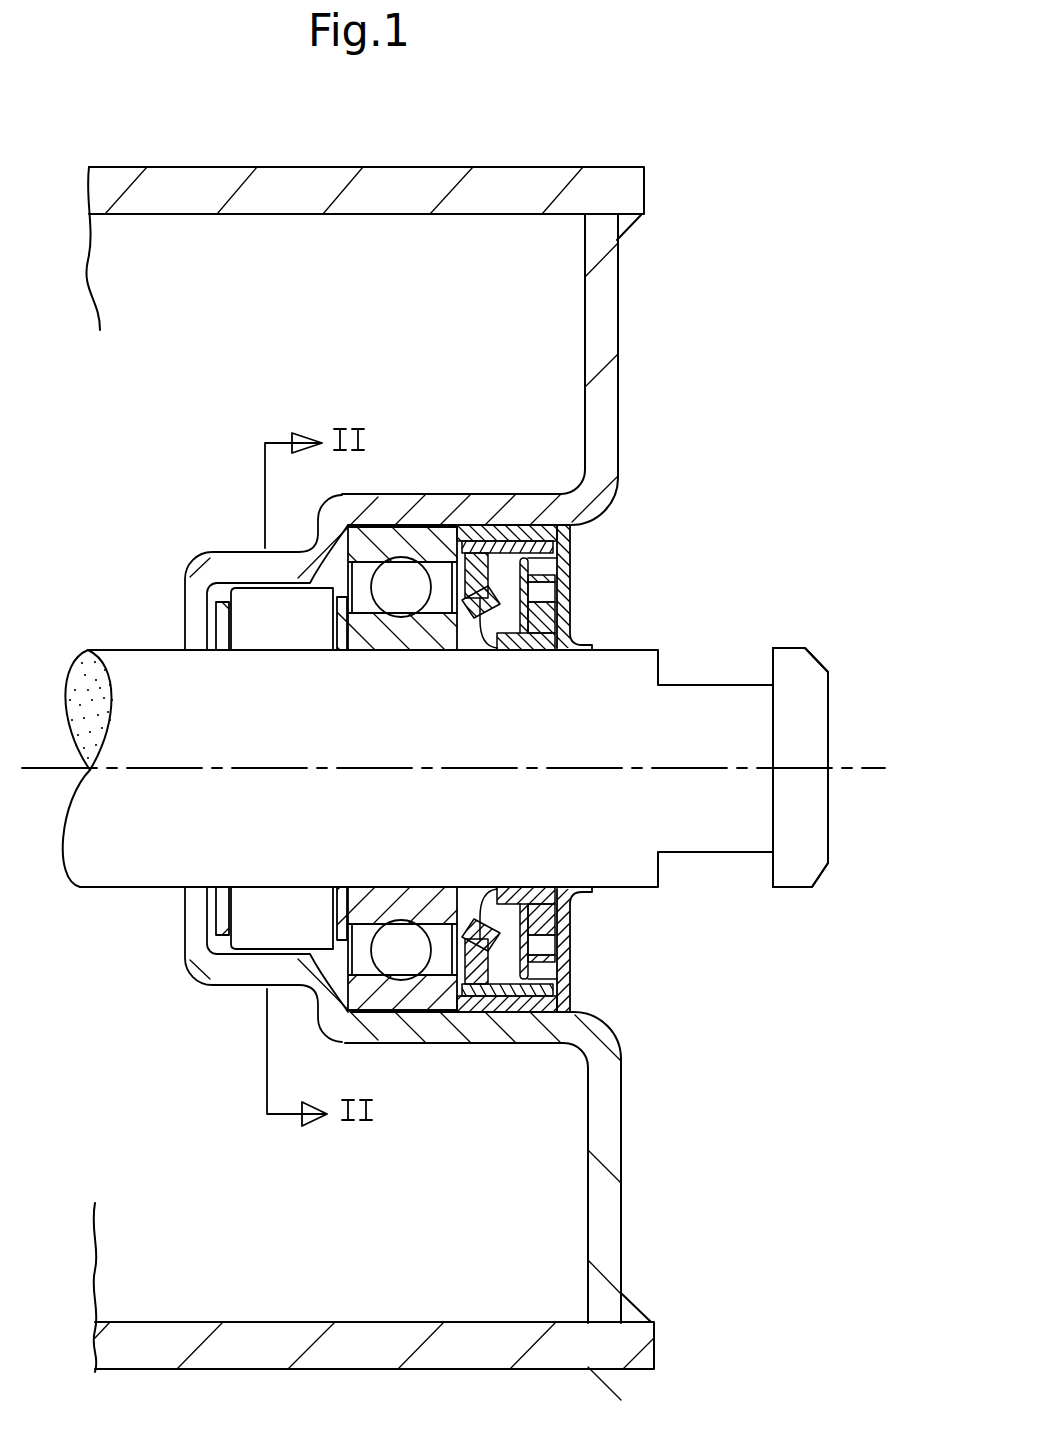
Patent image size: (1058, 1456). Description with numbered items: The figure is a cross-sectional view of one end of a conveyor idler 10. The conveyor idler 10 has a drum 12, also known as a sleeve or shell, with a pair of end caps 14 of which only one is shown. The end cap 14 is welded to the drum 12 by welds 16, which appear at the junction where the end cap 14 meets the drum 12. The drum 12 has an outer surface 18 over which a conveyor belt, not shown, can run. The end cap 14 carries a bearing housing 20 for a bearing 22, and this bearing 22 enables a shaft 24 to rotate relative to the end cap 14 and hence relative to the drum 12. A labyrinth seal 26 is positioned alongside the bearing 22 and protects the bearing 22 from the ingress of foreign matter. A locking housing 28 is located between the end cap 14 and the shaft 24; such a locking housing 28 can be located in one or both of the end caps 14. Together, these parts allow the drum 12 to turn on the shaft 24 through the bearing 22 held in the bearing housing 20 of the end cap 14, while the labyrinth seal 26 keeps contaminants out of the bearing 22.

The conveyor idler 10 is at (681, 101).
The drum 12 is at (527, 182).
The end cap 14 is at (617, 335).
The weld 16 is at (622, 219).
The outer surface 18 is at (170, 172).
The bearing housing 20 is at (419, 525).
The bearing 22 is at (460, 525).
The shaft 24 is at (807, 672).
The labyrinth seal 26 is at (556, 973).
The locking housing 28 is at (243, 612).